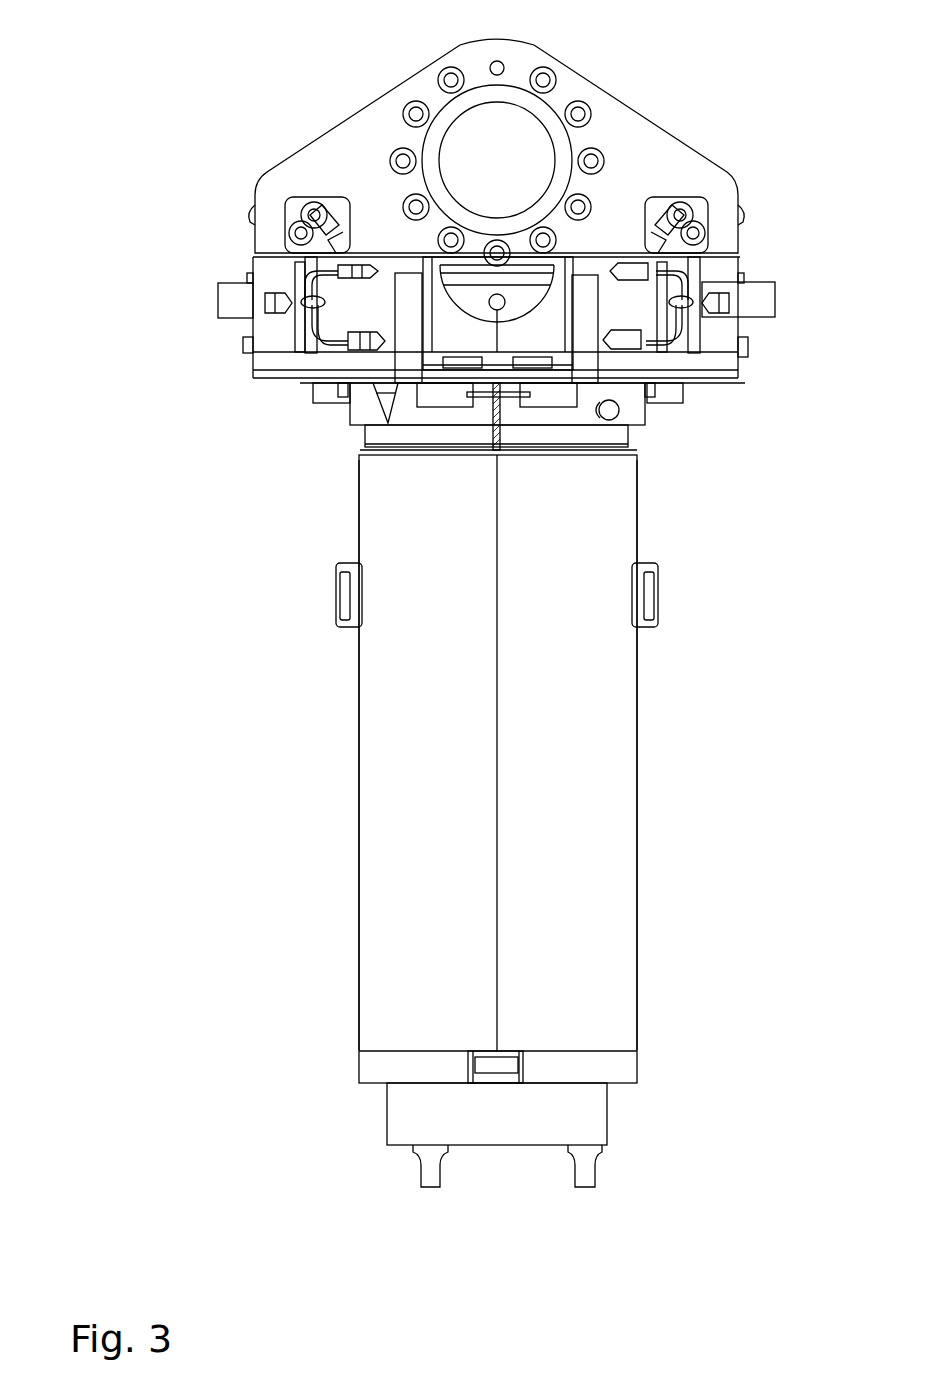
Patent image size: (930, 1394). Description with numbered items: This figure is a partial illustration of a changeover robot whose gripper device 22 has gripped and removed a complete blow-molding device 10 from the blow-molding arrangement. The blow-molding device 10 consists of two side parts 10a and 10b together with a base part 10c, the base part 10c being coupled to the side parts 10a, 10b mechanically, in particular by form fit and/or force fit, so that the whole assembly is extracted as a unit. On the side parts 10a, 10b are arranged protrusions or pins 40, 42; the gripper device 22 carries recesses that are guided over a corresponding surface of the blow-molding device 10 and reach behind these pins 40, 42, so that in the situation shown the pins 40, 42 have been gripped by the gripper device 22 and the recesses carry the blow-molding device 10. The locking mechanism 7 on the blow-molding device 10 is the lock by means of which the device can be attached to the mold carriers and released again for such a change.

The gripper device 22 is at (737, 78).
The blow-molding device 10 is at (579, 821).
The side part 10a is at (617, 770).
The side part 10b is at (372, 775).
The base part 10c is at (597, 1110).
The locking mechanism 7 is at (340, 596).
The pin 40 is at (533, 383).
The pin 42 is at (460, 383).